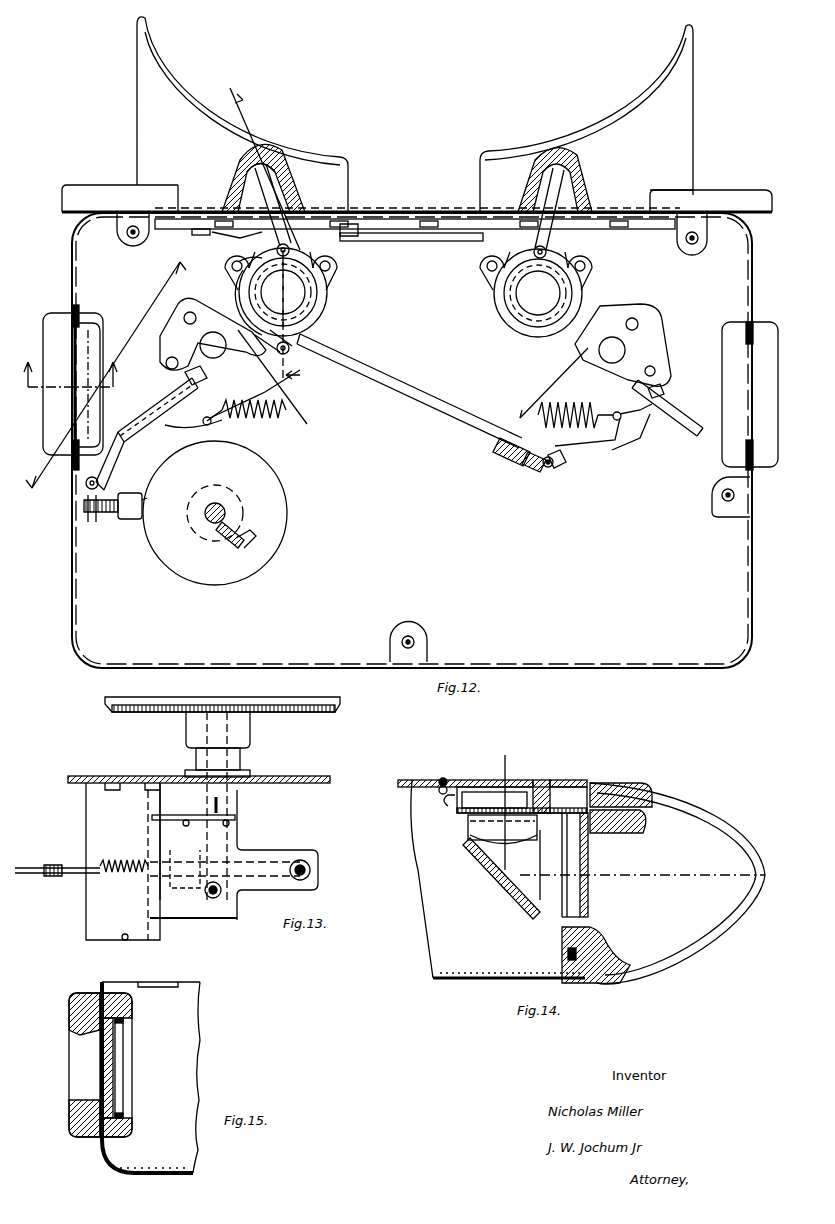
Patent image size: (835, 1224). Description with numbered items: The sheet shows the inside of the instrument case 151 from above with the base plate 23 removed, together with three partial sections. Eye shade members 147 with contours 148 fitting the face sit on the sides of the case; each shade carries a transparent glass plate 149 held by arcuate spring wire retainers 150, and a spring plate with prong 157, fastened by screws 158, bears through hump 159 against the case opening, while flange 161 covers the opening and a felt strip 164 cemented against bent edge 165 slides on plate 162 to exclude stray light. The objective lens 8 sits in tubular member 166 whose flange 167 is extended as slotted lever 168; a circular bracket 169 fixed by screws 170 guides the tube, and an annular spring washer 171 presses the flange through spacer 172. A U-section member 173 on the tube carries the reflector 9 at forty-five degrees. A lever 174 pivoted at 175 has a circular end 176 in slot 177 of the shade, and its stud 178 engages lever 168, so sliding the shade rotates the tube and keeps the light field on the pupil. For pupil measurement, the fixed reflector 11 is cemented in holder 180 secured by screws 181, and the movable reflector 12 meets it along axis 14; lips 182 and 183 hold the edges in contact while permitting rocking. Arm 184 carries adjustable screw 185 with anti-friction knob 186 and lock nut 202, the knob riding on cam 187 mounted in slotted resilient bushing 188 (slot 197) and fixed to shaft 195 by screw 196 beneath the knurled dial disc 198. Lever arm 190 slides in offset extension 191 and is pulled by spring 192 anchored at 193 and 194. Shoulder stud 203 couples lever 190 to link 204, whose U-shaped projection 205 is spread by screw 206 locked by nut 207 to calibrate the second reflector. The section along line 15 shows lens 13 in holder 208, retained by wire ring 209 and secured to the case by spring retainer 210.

In FIG. 12, the objective lens 8 is at (306, 292).
In FIG. 14, the objective lens 8 is at (503, 812).
In FIG. 14, the reflector 9 is at (515, 896).
In FIG. 12, the reflector 11 is at (182, 346).
In FIG. 13, the reflector 11 is at (81, 835).
In FIG. 12, the movable reflector 12 is at (156, 410).
In FIG. 12, the lens 13 is at (98, 364).
In FIG. 15, the lens 13 is at (100, 1065).
In FIG. 12, the axis of rotation 14 is at (273, 230).
In FIG. 13, the axis of rotation 14 is at (142, 845).
In FIG. 12, the section line 15 is at (70, 366).
In FIG. 13, the base plate 23 is at (88, 776).
In FIG. 14, the base plate 23 is at (414, 780).
In FIG. 12, the eye shade member 147 is at (224, 114).
In FIG. 14, the eye shade member 147 is at (642, 869).
In FIG. 12, the contour 148 is at (242, 98).
In FIG. 14, the transparent glass plate 149 is at (590, 890).
In FIG. 14, the arcuate spring wire retainer 150 is at (570, 925).
In FIG. 12, the case 151 is at (72, 258).
In FIG. 14, the case 151 is at (460, 980).
In FIG. 14, the prong 157 is at (568, 960).
In FIG. 12, the screw 158 is at (197, 239).
In FIG. 12, the arcuate hump 159 is at (235, 241).
In FIG. 12, the flange 161 is at (72, 192).
In FIG. 12, the plate 162 is at (405, 242).
In FIG. 12, the strip 164 is at (345, 222).
In FIG. 12, the bent edge 165 is at (358, 229).
In FIG. 14, the tubular member 166 is at (468, 826).
In FIG. 12, the flange 167 is at (290, 252).
In FIG. 14, the flange 167 is at (462, 812).
In FIG. 12, the slotted lever 168 is at (240, 256).
In FIG. 14, the slotted lever 168 is at (555, 815).
In FIG. 12, the circular bracket 169 is at (238, 290).
In FIG. 14, the circular bracket 169 is at (455, 800).
In FIG. 14, the screw 170 is at (441, 778).
In FIG. 14, the annular spring washer 171 is at (494, 798).
In FIG. 12, the spacer 172 is at (322, 310).
In FIG. 14, the spacer 172 is at (472, 787).
In FIG. 14, the reflector support member 173 is at (515, 890).
In FIG. 12, the lever 174 is at (278, 178).
In FIG. 14, the lever 174 is at (621, 781).
In FIG. 12, the pivot 175 is at (269, 292).
In FIG. 14, the pivot 175 is at (548, 785).
In FIG. 12, the circular end 176 is at (288, 178).
In FIG. 12, the slot 177 is at (268, 165).
In FIG. 12, the stud 178 is at (298, 208).
In FIG. 14, the stud 178 is at (615, 830).
In FIG. 12, the holder 180 is at (170, 322).
In FIG. 13, the holder 180 is at (86, 814).
In FIG. 13, the screw 181 is at (140, 794).
In FIG. 12, the lip 182 is at (164, 371).
In FIG. 13, the lip 182 is at (193, 810).
In FIG. 13, the lip 183 is at (165, 922).
In FIG. 12, the arm 184 is at (112, 460).
In FIG. 12, the adjustable screw 185 is at (102, 514).
In FIG. 12, the anti-friction knob 186 is at (130, 522).
In FIG. 12, the cam 187 is at (178, 570).
In FIG. 13, the bearing bushing 188 is at (240, 758).
In FIG. 12, the lever arm 190 is at (251, 397).
In FIG. 13, the lever arm 190 is at (101, 859).
In FIG. 12, the offset extension 191 is at (188, 426).
In FIG. 13, the offset extension 191 is at (180, 884).
In FIG. 12, the spring 192 is at (254, 423).
In FIG. 12, the spring anchor 193 is at (290, 377).
In FIG. 12, the spring anchor 194 is at (226, 428).
In FIG. 12, the shaft 195 is at (228, 508).
In FIG. 13, the shaft 195 is at (225, 803).
In FIG. 12, the screw 196 is at (244, 548).
In FIG. 13, the screw 196 is at (212, 900).
In FIG. 13, the longitudinal slot 197 is at (222, 850).
In FIG. 13, the dial disc 198 is at (290, 698).
In FIG. 12, the lock nut 202 is at (90, 522).
In FIG. 12, the shoulder stud 203 is at (309, 342).
In FIG. 13, the shoulder stud 203 is at (56, 884).
In FIG. 12, the link member 204 is at (444, 420).
In FIG. 13, the link member 204 is at (57, 871).
In FIG. 12, the U-shaped projection 205 is at (512, 456).
In FIG. 12, the screw 206 is at (532, 466).
In FIG. 12, the lock nut 207 is at (548, 470).
In FIG. 12, the lens holder 208 is at (68, 370).
In FIG. 15, the lens holder 208 is at (83, 1065).
In FIG. 15, the resilient wire ring 209 is at (123, 1105).
In FIG. 12, the spring retainer 210 is at (80, 312).
In FIG. 15, the spring retainer 210 is at (110, 1000).